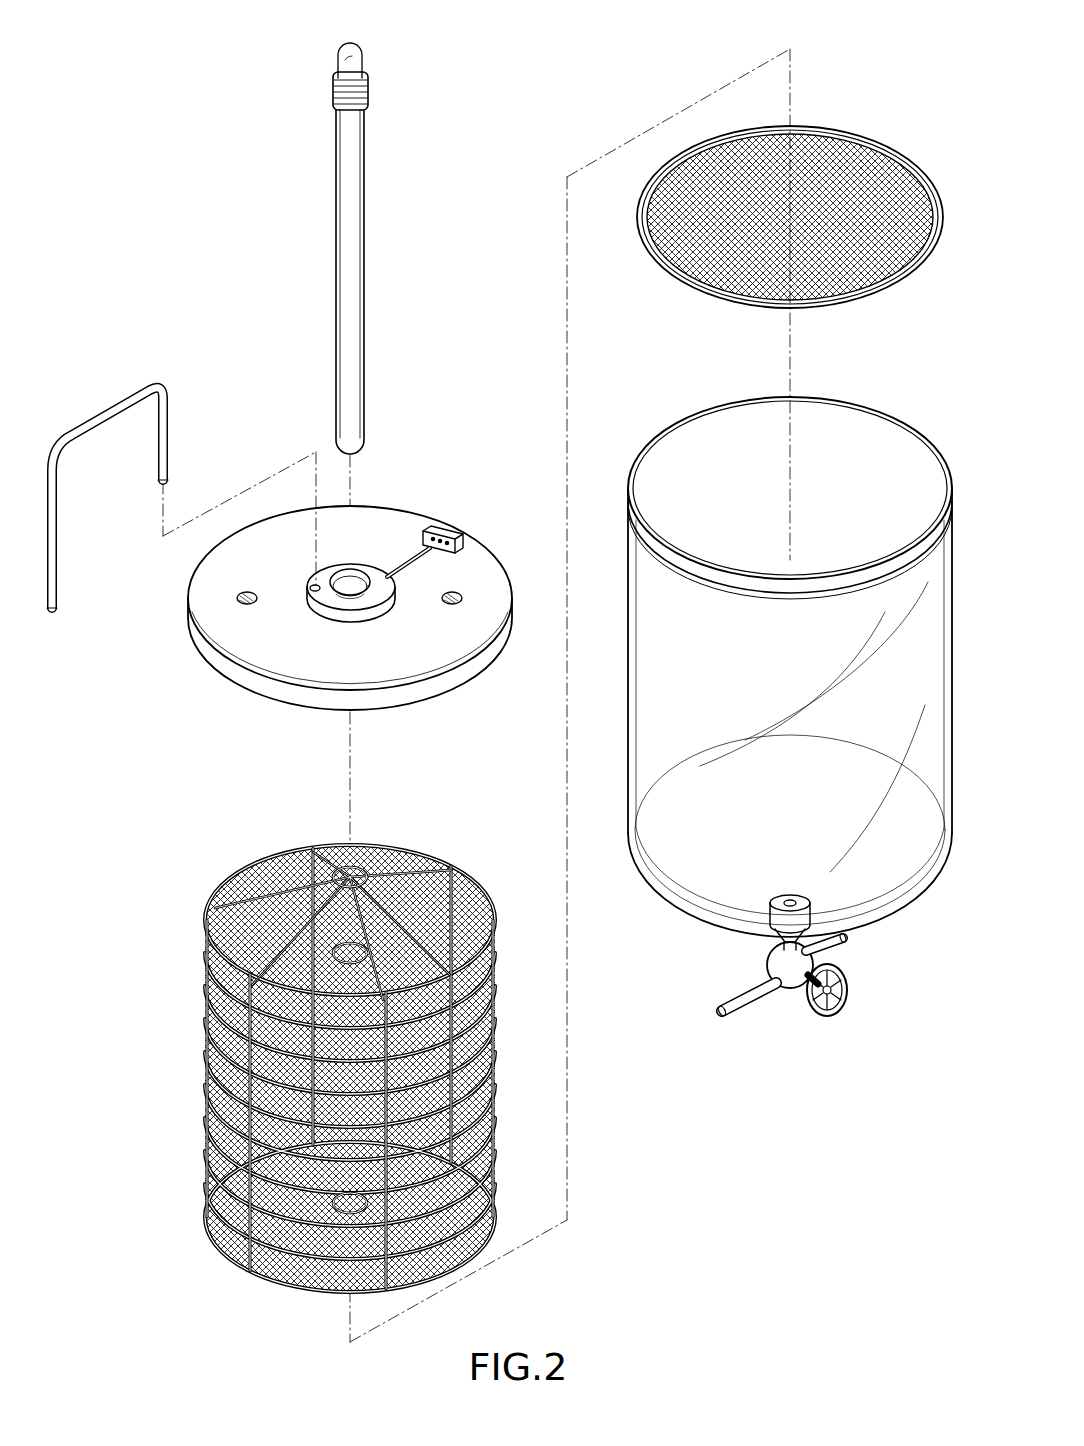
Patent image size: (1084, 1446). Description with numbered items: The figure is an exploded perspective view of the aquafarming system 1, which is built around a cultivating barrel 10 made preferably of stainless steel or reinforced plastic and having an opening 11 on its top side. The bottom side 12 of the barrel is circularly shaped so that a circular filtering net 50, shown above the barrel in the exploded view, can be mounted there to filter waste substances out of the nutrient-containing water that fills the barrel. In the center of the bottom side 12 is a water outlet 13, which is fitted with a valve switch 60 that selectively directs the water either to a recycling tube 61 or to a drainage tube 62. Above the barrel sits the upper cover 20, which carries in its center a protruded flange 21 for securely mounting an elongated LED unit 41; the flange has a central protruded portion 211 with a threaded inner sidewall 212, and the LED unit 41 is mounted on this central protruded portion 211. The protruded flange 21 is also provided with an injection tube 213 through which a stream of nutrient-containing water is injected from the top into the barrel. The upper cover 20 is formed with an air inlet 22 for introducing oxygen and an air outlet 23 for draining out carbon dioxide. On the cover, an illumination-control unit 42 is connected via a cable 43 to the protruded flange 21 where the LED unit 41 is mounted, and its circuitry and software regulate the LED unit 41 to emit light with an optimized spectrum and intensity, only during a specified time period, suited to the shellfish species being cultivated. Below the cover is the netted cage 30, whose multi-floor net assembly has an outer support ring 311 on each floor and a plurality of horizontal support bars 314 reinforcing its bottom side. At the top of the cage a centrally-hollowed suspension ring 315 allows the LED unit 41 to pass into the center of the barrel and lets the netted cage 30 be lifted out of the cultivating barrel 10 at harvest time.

The aquafarming system 1 is at (537, 92).
The cultivating barrel 10 is at (840, 394).
The opening 11 is at (893, 440).
The bottom side 12 is at (893, 880).
The water outlet 13 is at (772, 940).
The upper cover 20 is at (392, 503).
The protruded flange 21 is at (362, 630).
The central protruded portion 211 is at (372, 592).
The threaded inner sidewall 212 is at (322, 593).
The injection tube 213 is at (160, 386).
The air inlet 22 is at (456, 594).
The air outlet 23 is at (246, 601).
The netted cage 30 is at (343, 1057).
The outer support ring 311 is at (468, 885).
The horizontal support bar 314 is at (262, 1274).
The suspension ring 315 is at (352, 868).
The LED unit 41 is at (345, 215).
The illumination-control unit 42 is at (434, 532).
The cable 43 is at (407, 566).
The circular filtering net 50 is at (862, 150).
The valve switch 60 is at (842, 1014).
The recycling tube 61 is at (742, 1012).
The drainage tube 62 is at (845, 942).